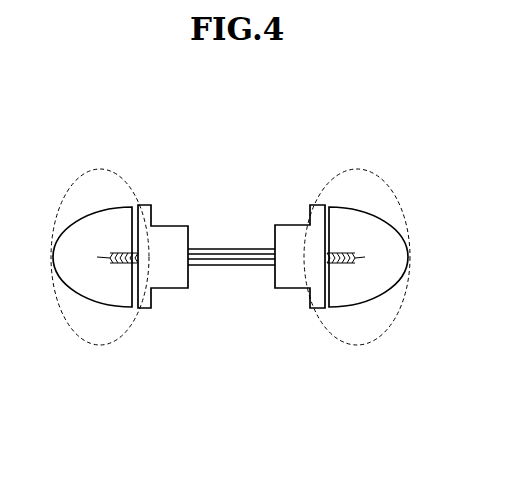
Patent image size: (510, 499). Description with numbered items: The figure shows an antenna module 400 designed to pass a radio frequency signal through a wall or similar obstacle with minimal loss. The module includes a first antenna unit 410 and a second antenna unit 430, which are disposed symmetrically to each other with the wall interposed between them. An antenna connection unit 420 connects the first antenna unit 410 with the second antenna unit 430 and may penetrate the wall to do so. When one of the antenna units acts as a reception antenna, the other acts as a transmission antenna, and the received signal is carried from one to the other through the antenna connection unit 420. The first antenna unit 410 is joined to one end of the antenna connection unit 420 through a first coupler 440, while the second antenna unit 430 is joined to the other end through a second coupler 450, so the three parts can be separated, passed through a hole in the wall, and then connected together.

The antenna module 400 is at (268, 145).
The first antenna unit 410 is at (98, 345).
The antenna connection unit 420 is at (233, 267).
The second antenna unit 430 is at (362, 345).
The first coupler 440 is at (180, 222).
The second coupler 450 is at (282, 221).